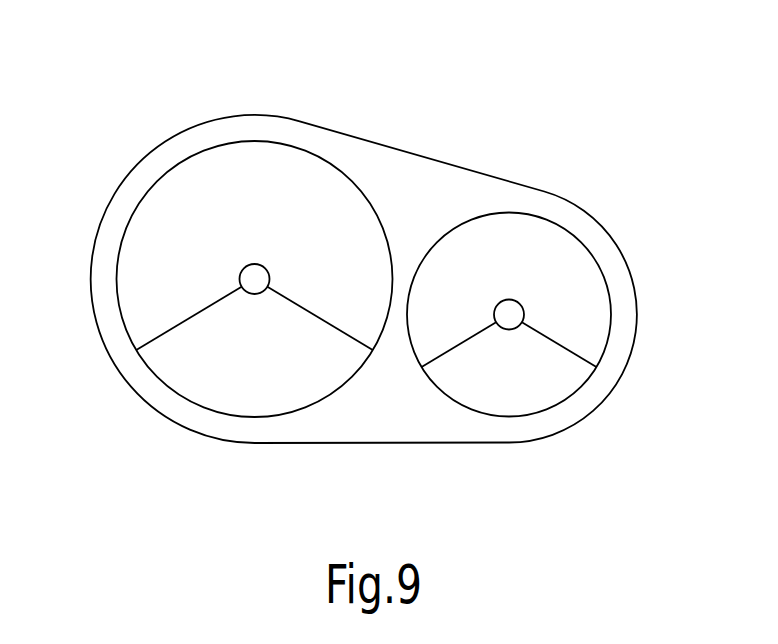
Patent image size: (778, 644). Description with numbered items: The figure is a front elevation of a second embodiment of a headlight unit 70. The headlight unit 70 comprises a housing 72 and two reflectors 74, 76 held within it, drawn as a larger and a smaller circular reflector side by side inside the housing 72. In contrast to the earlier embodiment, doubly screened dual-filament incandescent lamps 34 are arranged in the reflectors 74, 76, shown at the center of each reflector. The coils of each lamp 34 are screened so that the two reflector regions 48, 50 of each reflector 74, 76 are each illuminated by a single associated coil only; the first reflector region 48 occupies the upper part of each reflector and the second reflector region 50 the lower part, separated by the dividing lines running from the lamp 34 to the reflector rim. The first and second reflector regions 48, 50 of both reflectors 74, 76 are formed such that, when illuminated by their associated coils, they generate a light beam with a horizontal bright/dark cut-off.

The headlight unit 70 is at (573, 167).
The housing 72 is at (619, 250).
The reflector 74 is at (249, 141).
The reflector 76 is at (518, 212).
The doubly screened dual-filament incandescent lamp 34 is at (240, 278).
The first reflector region 48 is at (246, 228).
The second reflector region 50 is at (246, 357).